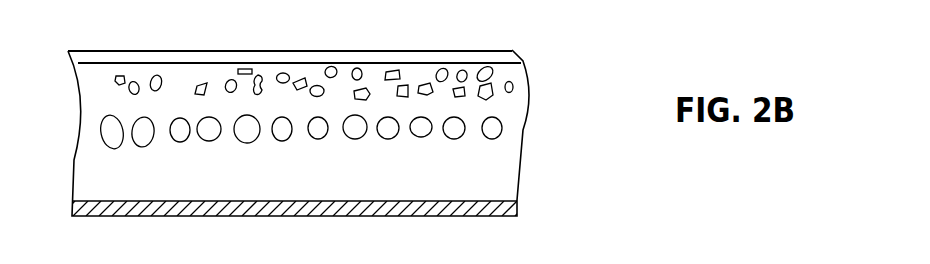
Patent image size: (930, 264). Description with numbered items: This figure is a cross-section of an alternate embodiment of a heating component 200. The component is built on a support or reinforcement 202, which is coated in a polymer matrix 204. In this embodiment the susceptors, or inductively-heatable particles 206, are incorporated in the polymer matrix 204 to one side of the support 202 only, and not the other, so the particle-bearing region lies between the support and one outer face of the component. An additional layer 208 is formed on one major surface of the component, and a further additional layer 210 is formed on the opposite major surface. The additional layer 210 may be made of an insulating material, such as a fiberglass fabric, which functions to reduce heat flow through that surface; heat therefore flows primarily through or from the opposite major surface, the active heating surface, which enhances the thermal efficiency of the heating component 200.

The heating component 200 is at (505, 60).
The support 202 is at (502, 131).
The polymer matrix 204 is at (512, 105).
The inductively-heatable particles 206 is at (120, 76).
The additional layer 208 is at (523, 57).
The additional layer 210 is at (518, 207).